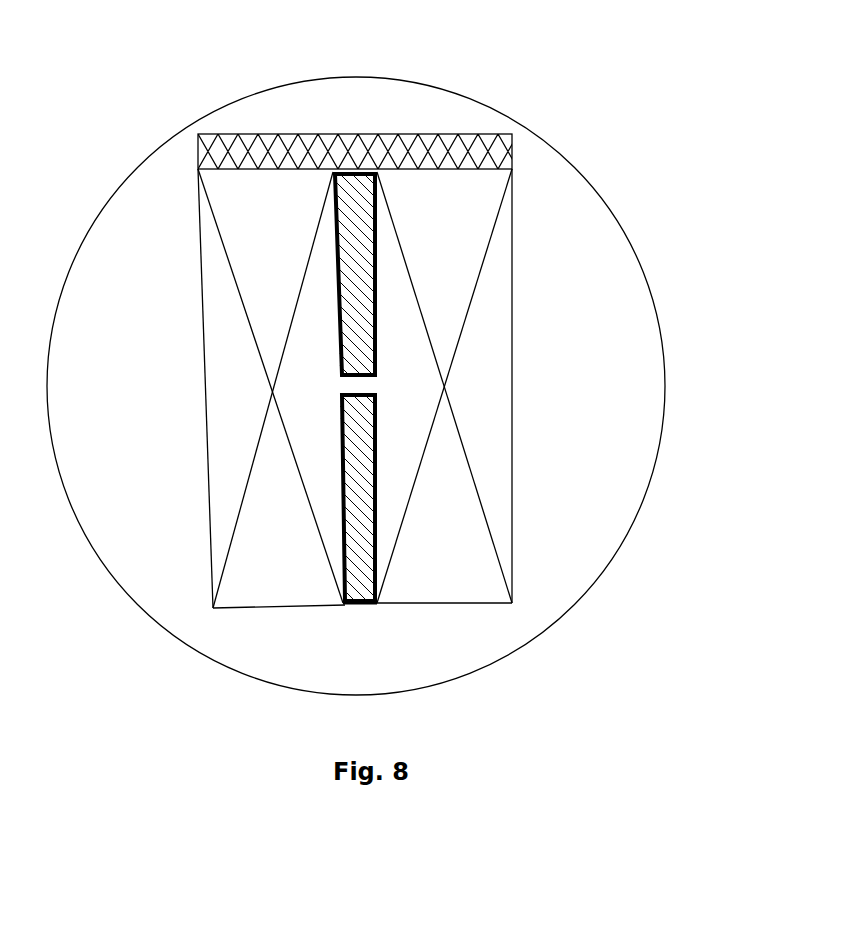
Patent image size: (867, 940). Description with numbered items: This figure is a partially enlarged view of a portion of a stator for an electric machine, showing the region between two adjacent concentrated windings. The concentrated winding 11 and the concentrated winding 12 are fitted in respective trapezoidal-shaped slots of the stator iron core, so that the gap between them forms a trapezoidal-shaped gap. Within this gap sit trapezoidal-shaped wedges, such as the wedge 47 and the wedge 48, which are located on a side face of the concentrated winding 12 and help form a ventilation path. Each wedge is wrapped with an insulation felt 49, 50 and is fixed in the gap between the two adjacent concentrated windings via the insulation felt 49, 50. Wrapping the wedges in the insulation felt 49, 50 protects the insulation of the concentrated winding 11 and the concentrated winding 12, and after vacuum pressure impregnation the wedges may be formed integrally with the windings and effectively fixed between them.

The concentrated winding 11 is at (195, 328).
The concentrated winding 12 is at (463, 315).
The wedge 47 is at (358, 93).
The wedge 48 is at (246, 562).
The insulation felt 49 is at (497, 275).
The insulation felt 50 is at (495, 501).